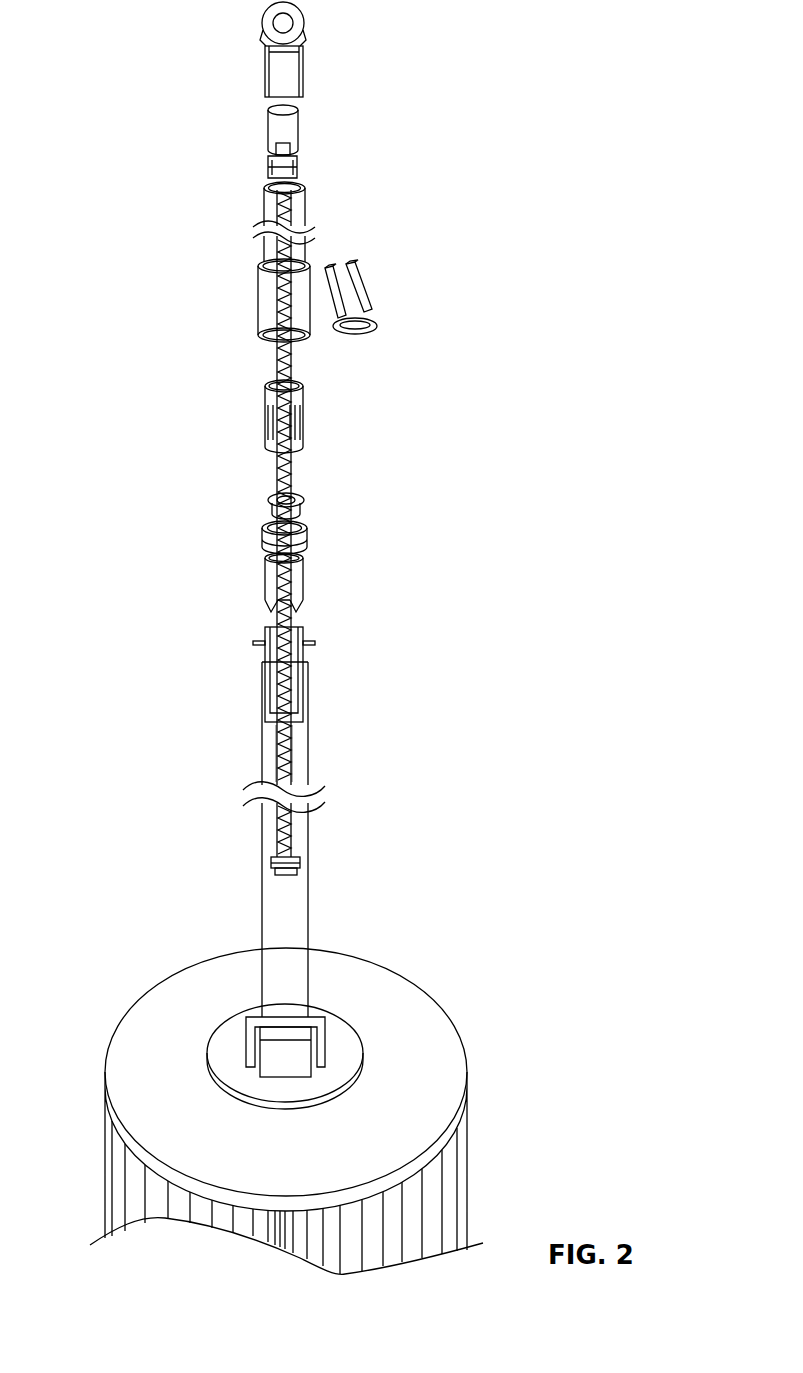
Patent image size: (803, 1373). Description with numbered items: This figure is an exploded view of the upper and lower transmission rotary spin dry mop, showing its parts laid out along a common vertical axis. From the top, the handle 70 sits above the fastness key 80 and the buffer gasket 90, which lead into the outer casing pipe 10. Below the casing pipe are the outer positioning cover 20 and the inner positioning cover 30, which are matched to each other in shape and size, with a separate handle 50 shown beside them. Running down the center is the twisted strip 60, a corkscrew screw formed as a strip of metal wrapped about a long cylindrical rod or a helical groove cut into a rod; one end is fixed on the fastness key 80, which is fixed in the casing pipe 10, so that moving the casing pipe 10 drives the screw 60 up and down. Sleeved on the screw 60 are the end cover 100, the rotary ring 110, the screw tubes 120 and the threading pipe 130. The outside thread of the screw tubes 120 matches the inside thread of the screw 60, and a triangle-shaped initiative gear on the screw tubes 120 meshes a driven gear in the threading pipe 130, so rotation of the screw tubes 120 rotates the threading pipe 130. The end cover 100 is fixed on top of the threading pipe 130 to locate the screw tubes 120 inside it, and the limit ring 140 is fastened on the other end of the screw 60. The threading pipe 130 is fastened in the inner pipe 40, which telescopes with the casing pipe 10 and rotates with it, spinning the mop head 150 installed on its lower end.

The handle 70 is at (285, 77).
The fastness key 80 is at (275, 130).
The buffer gasket 90 is at (295, 173).
The outer casing pipe 10 is at (272, 212).
The outer positioning cover 20 is at (258, 305).
The handle 50 is at (368, 290).
The inner positioning cover 30 is at (305, 418).
The end cover 100 is at (268, 500).
The rotary ring 110 is at (305, 533).
The screw tubes 120 is at (265, 580).
The threading pipe 130 is at (305, 650).
The twisted strip 60 is at (285, 752).
The limit ring 140 is at (298, 862).
The inner pipe 40 is at (273, 915).
The mop head 150 is at (428, 1028).